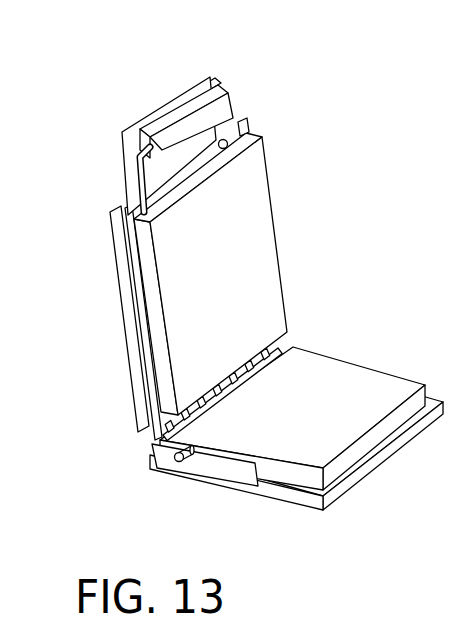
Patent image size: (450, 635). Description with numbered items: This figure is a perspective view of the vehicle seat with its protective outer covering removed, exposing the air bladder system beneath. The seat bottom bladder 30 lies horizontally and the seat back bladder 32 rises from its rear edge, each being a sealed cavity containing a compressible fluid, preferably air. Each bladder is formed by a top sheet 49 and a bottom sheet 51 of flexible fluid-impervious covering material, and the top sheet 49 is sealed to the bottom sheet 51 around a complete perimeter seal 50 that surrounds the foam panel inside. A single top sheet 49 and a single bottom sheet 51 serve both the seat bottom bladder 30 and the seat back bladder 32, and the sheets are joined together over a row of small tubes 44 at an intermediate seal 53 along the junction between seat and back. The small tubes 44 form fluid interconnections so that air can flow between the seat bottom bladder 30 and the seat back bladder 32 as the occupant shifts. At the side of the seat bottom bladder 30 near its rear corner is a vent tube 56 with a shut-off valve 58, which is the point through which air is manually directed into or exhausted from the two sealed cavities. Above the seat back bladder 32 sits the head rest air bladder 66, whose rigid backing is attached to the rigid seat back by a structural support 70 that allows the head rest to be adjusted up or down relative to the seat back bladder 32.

The seat bottom bladder 30 is at (367, 385).
The seat back bladder 32 is at (243, 202).
The small tubes 44 is at (170, 427).
The top sheet 49 is at (391, 400).
The perimeter seal 50 is at (172, 108).
The bottom sheet 51 is at (132, 123).
The intermediate seal 53 is at (265, 357).
The vent tube 56 is at (193, 453).
The shut-off valve 58 is at (185, 458).
The head rest air bladder 66 is at (213, 127).
The structural support 70 is at (130, 183).